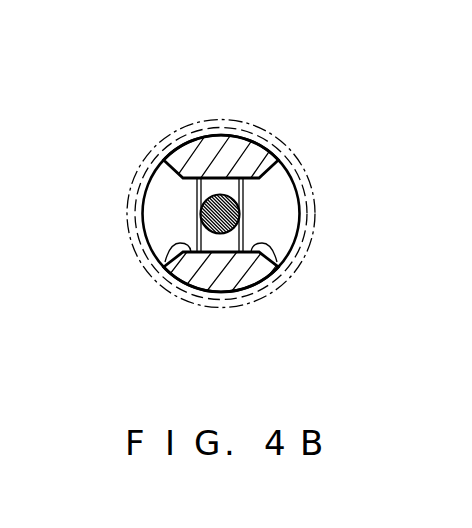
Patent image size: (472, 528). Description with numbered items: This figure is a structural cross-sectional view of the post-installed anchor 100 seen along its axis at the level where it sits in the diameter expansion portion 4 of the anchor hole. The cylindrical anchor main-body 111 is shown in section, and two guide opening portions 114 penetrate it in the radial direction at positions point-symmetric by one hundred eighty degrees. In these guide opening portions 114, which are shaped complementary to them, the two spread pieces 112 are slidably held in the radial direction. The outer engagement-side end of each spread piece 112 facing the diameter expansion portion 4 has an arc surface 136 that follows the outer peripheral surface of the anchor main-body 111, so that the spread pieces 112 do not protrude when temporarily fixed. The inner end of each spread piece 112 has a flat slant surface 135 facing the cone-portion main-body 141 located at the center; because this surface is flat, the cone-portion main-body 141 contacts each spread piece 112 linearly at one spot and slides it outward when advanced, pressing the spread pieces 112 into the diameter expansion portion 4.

The post-installed anchor 100 is at (258, 92).
The diameter expansion portion 4 is at (297, 263).
The spread pieces 112 is at (127, 176).
The arc surface 136 is at (141, 217).
The anchor main-body 111 is at (272, 155).
The slant surface 135 is at (208, 192).
The cone-portion main-body 141 is at (212, 233).
The guide opening portions 114 is at (167, 263).